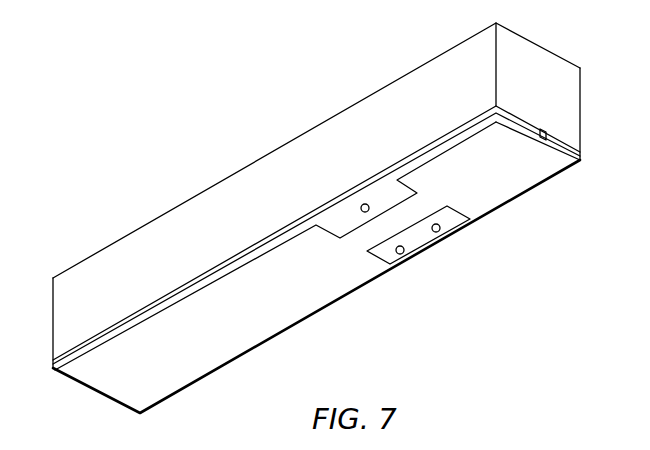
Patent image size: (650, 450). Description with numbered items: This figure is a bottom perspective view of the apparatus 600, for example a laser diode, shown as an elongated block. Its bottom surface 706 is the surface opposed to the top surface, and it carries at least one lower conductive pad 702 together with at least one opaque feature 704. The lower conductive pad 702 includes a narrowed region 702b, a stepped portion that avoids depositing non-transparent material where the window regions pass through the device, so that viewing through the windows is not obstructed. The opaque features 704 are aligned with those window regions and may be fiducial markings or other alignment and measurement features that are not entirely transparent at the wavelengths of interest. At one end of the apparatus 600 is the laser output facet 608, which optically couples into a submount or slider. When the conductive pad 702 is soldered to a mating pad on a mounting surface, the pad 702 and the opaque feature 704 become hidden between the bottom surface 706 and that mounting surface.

The apparatus 600 is at (270, 152).
The lower conductive pad 702 is at (123, 375).
The narrowed region 702b is at (370, 233).
The opaque feature 704 is at (368, 212).
The bottom surface 706 is at (393, 265).
The laser output facet 608 is at (543, 140).